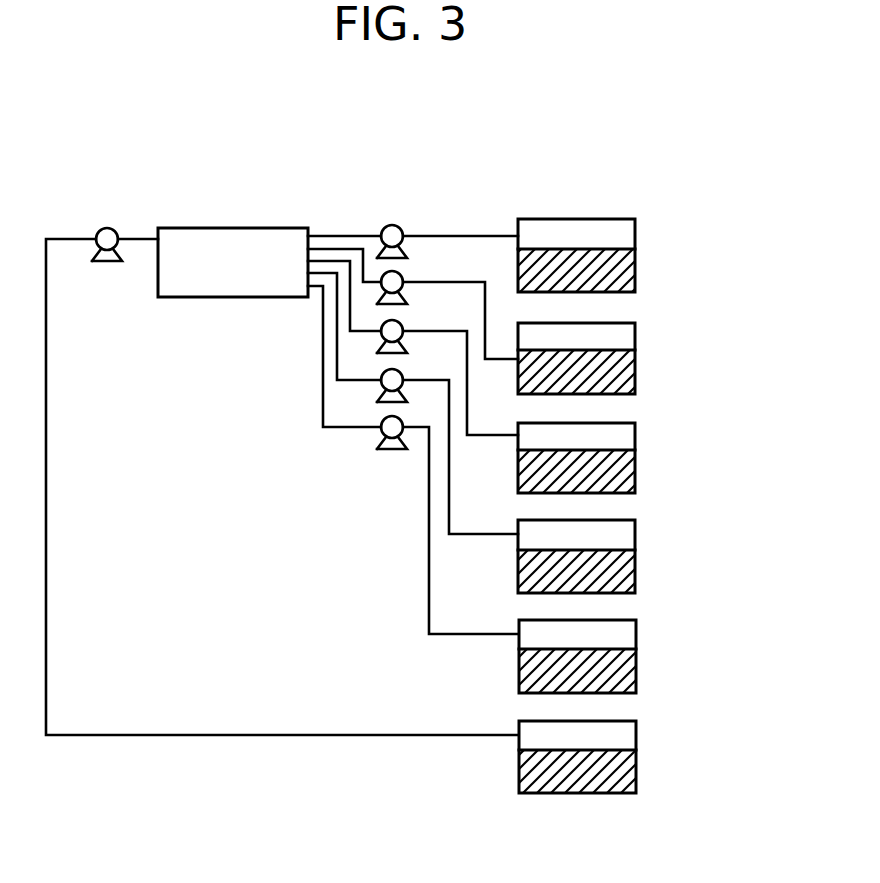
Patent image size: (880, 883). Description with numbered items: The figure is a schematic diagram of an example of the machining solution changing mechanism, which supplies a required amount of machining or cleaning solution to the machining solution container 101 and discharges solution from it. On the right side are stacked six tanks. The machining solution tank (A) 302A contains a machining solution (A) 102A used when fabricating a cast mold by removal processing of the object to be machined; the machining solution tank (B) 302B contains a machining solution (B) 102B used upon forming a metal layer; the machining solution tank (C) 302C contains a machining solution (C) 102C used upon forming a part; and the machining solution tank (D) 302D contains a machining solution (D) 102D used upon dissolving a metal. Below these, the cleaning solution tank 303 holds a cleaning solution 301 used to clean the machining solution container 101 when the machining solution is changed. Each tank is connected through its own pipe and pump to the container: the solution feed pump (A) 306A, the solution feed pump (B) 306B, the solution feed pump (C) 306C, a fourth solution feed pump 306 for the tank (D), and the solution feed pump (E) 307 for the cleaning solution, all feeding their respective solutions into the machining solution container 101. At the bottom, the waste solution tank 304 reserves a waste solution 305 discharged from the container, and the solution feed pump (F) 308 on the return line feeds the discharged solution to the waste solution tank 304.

The machining solution container 101 is at (242, 298).
The solution feed pump (F) 308 is at (107, 228).
The solution feed pump (A) 306A is at (392, 225).
The solution feed pump (B) 306B is at (403, 280).
The solution feed pump (C) 306C is at (403, 328).
The solution feed pump (D) 306 is at (381, 386).
The solution feed pump (E) 307 is at (385, 450).
The machining solution tank (A) 302A is at (622, 235).
The machining solution (A) 102A is at (618, 273).
The machining solution tank (B) 302B is at (618, 339).
The machining solution (B) 102B is at (618, 376).
The machining solution tank (C) 302C is at (622, 438).
The machining solution (C) 102C is at (618, 473).
The machining solution tank (D) 302D is at (618, 540).
The machining solution (D) 102D is at (618, 573).
The cleaning solution tank 303 is at (622, 637).
The cleaning solution 301 is at (618, 675).
The waste solution tank 304 is at (622, 738).
The waste solution 305 is at (618, 779).